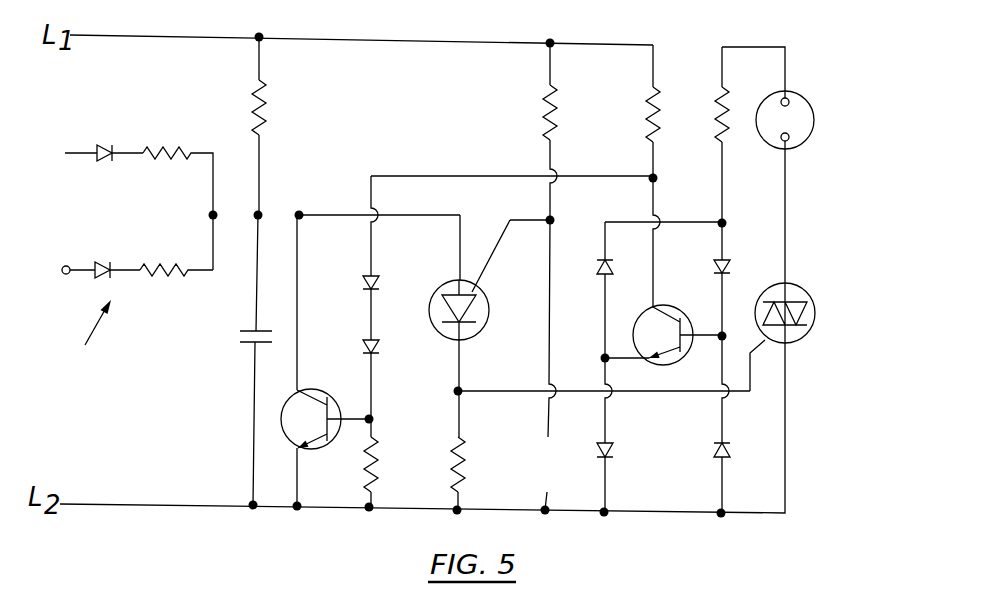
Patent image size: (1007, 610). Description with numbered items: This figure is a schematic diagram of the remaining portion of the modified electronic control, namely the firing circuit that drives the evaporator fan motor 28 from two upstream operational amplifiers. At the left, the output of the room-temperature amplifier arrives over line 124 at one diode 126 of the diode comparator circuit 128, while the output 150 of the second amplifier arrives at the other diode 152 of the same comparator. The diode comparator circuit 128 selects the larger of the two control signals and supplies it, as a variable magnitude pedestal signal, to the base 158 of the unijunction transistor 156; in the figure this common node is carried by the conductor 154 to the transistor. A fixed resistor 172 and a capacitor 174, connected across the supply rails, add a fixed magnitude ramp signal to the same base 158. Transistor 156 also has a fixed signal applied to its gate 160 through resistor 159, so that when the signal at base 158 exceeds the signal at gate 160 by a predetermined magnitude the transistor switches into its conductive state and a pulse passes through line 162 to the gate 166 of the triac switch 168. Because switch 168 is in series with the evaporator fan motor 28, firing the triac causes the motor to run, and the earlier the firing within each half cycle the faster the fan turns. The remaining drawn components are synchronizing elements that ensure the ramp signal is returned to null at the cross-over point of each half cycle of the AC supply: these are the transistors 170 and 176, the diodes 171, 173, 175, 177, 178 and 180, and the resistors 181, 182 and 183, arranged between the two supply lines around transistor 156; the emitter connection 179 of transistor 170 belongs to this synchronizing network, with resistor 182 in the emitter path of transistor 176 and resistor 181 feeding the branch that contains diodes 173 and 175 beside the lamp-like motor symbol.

The evaporator fan motor 28 is at (813, 104).
The line 124 is at (77, 152).
The diode 126 is at (104, 148).
The diode comparator circuit 128 is at (87, 339).
The output 150 is at (69, 266).
The diode 152 is at (103, 265).
The conductor 154 is at (338, 212).
The unijunction transistor 156 is at (469, 335).
The base 158 is at (452, 290).
The resistor 159 is at (543, 120).
The gate 160 is at (472, 290).
The line 162 is at (530, 395).
The gate 166 is at (765, 343).
The switch 168 is at (808, 335).
The transistor 170 is at (679, 281).
The diode 171 is at (600, 255).
The fixed resistor 172 is at (268, 105).
The diode 173 is at (748, 256).
The capacitor 174 is at (248, 343).
The diode 175 is at (712, 450).
The transistor 176 is at (345, 360).
The diode 177 is at (612, 450).
The diode 178 is at (363, 282).
The emitter lead 179 is at (690, 352).
The diode 180 is at (380, 352).
The resistor 181 is at (717, 125).
The resistor 182 is at (378, 463).
The resistor 183 is at (648, 125).